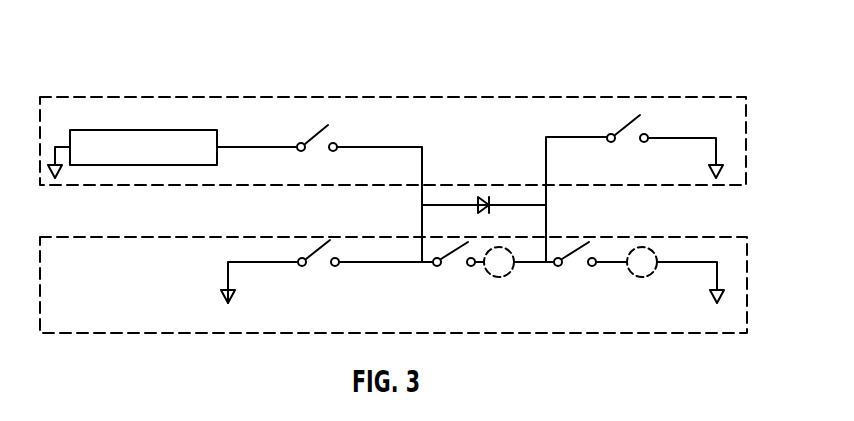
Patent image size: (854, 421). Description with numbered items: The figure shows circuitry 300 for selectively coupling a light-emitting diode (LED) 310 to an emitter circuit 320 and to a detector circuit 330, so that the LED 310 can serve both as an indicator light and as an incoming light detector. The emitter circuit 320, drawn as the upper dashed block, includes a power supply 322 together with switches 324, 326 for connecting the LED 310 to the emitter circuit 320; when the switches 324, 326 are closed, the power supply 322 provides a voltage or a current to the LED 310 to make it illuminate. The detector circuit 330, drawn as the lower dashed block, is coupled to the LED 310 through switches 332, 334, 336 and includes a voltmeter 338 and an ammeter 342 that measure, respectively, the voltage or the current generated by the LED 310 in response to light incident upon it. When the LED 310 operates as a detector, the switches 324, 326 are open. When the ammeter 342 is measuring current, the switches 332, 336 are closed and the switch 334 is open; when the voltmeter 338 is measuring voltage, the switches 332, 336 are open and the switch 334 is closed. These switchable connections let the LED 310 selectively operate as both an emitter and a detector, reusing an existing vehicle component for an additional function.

The circuitry 300 is at (140, 26).
The light-emitting diode 310 is at (490, 195).
The emitter circuit 320 is at (383, 97).
The power supply 322 is at (130, 128).
The switch 324 is at (322, 122).
The switch 326 is at (635, 118).
The detector circuit 330 is at (552, 333).
The switch 332 is at (315, 253).
The switch 334 is at (452, 250).
The switch 336 is at (578, 250).
The voltmeter 338 is at (499, 279).
The ammeter 342 is at (642, 279).